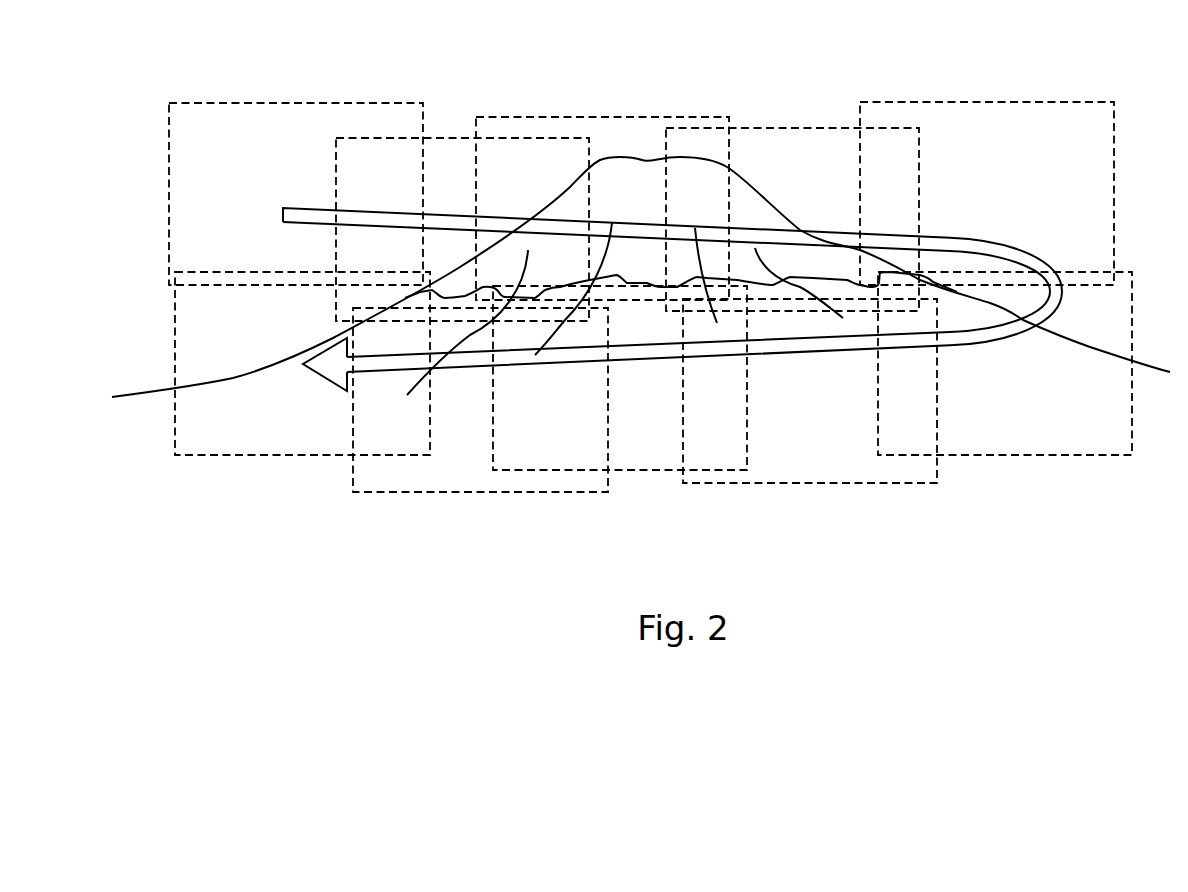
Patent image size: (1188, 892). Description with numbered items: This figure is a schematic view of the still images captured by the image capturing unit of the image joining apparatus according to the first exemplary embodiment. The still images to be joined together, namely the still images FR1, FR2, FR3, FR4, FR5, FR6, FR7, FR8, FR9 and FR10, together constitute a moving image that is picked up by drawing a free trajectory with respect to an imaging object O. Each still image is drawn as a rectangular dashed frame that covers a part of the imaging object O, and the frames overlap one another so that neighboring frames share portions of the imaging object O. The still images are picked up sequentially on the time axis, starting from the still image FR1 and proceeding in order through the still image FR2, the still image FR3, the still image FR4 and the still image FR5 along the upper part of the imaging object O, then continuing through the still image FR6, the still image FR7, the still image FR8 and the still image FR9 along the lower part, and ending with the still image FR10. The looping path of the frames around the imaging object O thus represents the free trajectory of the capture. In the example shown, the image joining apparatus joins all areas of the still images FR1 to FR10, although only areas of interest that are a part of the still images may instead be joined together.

The still image FR1 is at (296, 102).
The still image FR2 is at (449, 137).
The still image FR3 is at (601, 116).
The still image FR4 is at (791, 127).
The still image FR5 is at (984, 101).
The still image FR6 is at (1042, 457).
The still image FR7 is at (823, 485).
The still image FR8 is at (643, 472).
The still image FR9 is at (480, 493).
The still image FR10 is at (265, 457).
The imaging object O is at (642, 160).